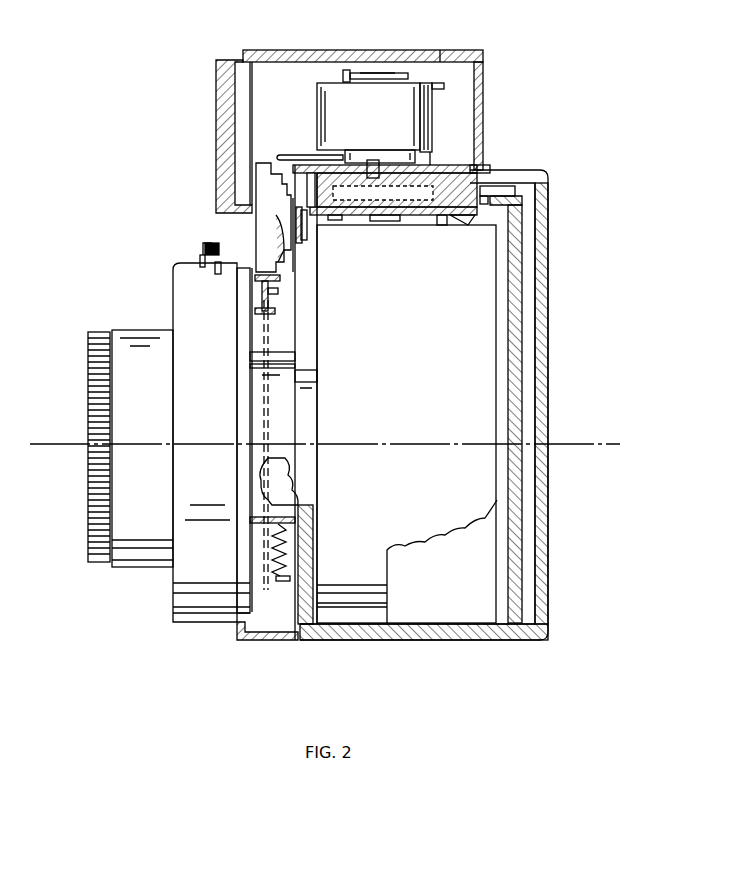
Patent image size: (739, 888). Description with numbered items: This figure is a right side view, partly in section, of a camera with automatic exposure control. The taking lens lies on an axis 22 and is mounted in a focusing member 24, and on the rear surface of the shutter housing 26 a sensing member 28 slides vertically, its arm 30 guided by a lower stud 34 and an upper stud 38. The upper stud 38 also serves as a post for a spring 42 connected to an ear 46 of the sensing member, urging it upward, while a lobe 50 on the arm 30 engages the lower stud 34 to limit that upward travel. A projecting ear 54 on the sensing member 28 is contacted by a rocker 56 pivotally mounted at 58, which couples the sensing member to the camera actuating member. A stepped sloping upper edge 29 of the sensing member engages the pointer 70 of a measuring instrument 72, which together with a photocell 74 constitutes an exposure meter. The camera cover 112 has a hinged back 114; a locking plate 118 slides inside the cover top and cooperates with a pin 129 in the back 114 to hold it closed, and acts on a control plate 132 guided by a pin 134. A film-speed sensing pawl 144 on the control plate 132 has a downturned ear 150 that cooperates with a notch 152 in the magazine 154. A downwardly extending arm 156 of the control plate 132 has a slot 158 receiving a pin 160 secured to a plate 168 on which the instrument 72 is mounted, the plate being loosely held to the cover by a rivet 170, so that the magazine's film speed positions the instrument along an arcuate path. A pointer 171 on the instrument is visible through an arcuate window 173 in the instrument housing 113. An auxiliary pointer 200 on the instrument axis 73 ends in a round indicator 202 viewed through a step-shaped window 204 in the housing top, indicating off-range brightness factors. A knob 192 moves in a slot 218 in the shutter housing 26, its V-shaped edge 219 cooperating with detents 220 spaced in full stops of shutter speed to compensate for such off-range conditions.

The axis 22 is at (48, 446).
The focusing member 24 is at (86, 376).
The shutter housing 26 is at (215, 476).
The sensing member 28 is at (262, 161).
The sloping upper edge 29 is at (285, 220).
The arm 30 is at (266, 578).
The lower stud 34 is at (262, 518).
The upper stud 38 is at (290, 352).
The spring 42 is at (285, 545).
The ear 46 is at (285, 576).
The lobe 50 is at (256, 600).
The projecting ear 54 is at (270, 310).
The rocker 56 is at (275, 311).
The pivot 58 is at (278, 291).
The pointer 70 is at (294, 155).
The measuring instrument 72 is at (375, 109).
The instrument axis 73 is at (343, 76).
The photocell 74 is at (216, 92).
The camera cover 112 is at (478, 172).
The instrument housing 113 is at (484, 78).
The back 114 is at (549, 340).
The locking plate 118 is at (425, 175).
The pin 129 is at (488, 202).
The control plate 132 is at (400, 210).
The pin 134 is at (345, 217).
The film-speed sensing pawl 144 is at (415, 221).
The downturned ear 150 is at (442, 226).
The notch 152 is at (465, 227).
The magazine 154 is at (425, 378).
The downwardly extending arm 156 is at (300, 246).
The slot 158 is at (308, 225).
The pin 160 is at (335, 220).
The plate 168 is at (432, 164).
The rivet 170 is at (372, 160).
The pointer 171 is at (440, 92).
The arcuate window 173 is at (445, 52).
The knob 192 is at (213, 242).
The auxiliary pointer 200 is at (380, 72).
The round indicator 202 is at (408, 76).
The window 204 is at (335, 50).
The slot 218 is at (220, 276).
The V-shaped edge 219 is at (200, 250).
The detents 220 is at (203, 268).